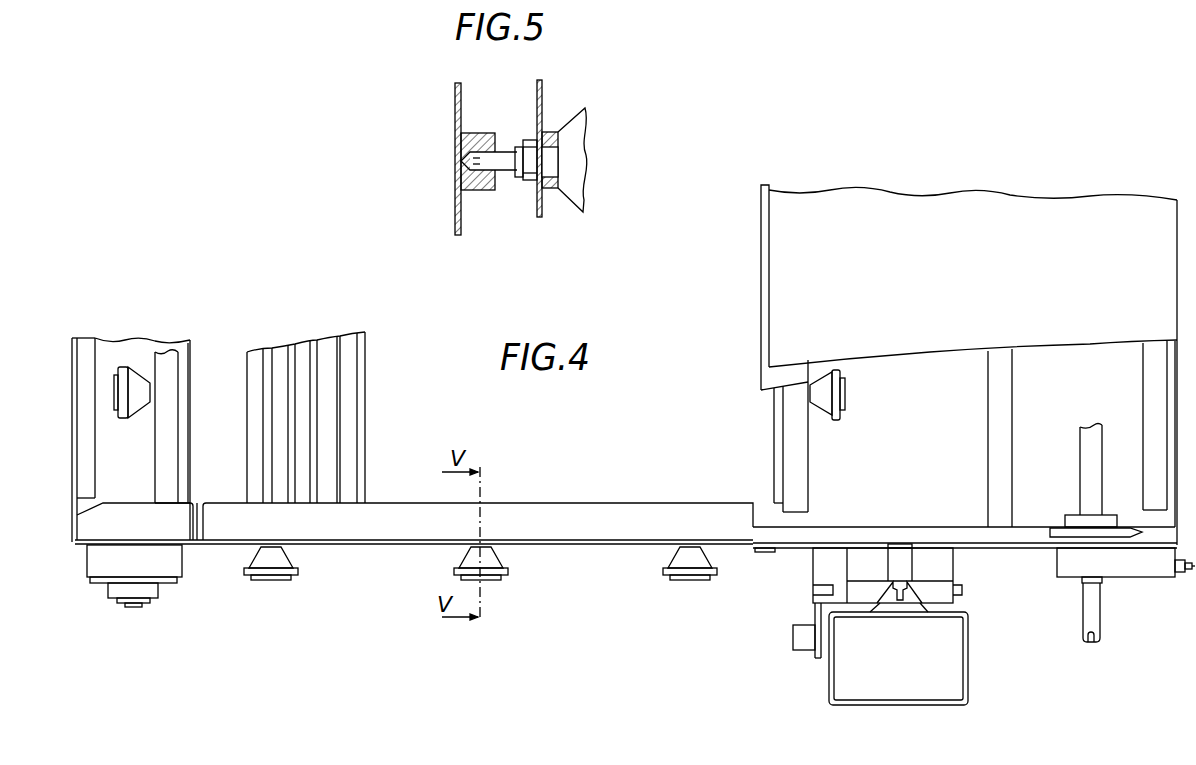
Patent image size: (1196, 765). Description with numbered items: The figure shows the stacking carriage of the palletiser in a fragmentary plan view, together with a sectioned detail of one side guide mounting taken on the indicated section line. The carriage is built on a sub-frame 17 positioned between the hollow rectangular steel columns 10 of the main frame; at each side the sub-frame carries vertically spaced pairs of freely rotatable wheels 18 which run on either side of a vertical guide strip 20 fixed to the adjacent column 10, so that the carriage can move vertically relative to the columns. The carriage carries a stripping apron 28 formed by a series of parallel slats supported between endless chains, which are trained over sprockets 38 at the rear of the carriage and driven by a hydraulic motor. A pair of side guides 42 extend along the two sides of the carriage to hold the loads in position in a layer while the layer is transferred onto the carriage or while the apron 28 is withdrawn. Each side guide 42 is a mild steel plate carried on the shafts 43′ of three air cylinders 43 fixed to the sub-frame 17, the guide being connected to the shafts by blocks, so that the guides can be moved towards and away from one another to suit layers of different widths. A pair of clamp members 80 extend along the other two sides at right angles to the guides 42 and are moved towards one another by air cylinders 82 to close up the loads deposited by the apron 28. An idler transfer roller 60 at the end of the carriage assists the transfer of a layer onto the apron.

In FIG. 4, the hollow rectangular cross-section steel column 10 is at (968, 632).
In FIG. 5, the sub-frame 17 is at (542, 90).
In FIG. 4, the sub-frame 17 is at (776, 549).
In FIG. 4, the wheels 18 is at (838, 590).
In FIG. 4, the vertical guide strip 20 is at (900, 594).
In FIG. 4, the stripping apron 28 is at (350, 345).
In FIG. 4, the sprockets 38 is at (1125, 527).
In FIG. 5, the side guide 42 is at (455, 210).
In FIG. 4, the side guide 42 is at (632, 525).
In FIG. 5, the air cylinders 43 is at (580, 195).
In FIG. 4, the air cylinders 43 is at (280, 583).
In FIG. 5, the shafts 43′ is at (503, 172).
In FIG. 4, the idler transfer roller 60 is at (83, 347).
In FIG. 4, the clamp members 80 is at (185, 392).
In FIG. 4, the air cylinders 82 is at (137, 387).